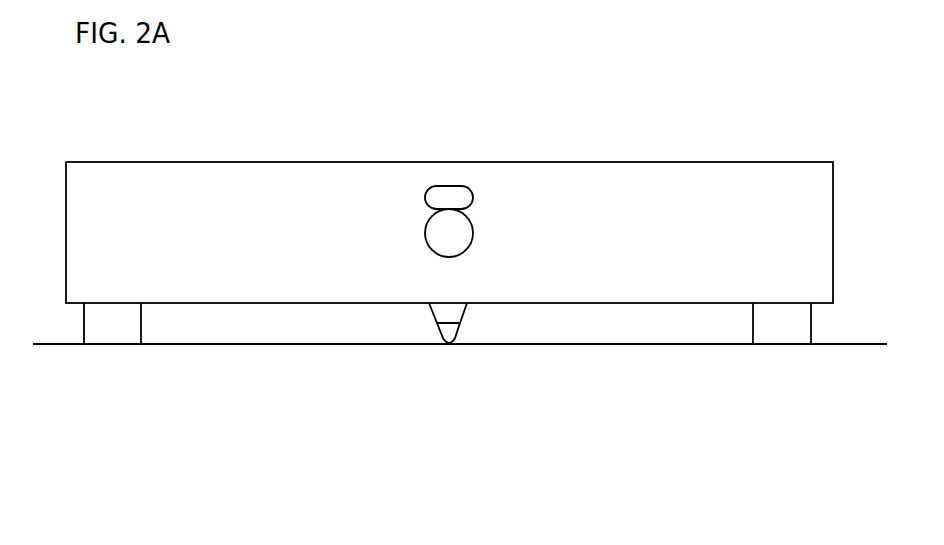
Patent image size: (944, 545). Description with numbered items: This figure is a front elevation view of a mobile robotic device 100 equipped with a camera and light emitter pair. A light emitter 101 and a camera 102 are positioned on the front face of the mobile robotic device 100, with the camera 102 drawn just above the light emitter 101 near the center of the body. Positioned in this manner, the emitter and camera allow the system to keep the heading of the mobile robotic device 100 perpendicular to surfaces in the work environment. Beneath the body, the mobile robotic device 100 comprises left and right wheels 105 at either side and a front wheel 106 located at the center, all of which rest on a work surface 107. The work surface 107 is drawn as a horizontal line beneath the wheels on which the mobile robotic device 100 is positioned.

The mobile robotic device 100 is at (550, 162).
The light emitter 101 is at (425, 235).
The camera 102 is at (425, 198).
The left and right wheels 105 is at (84, 327).
The front wheel 106 is at (458, 333).
The work surface 107 is at (206, 344).